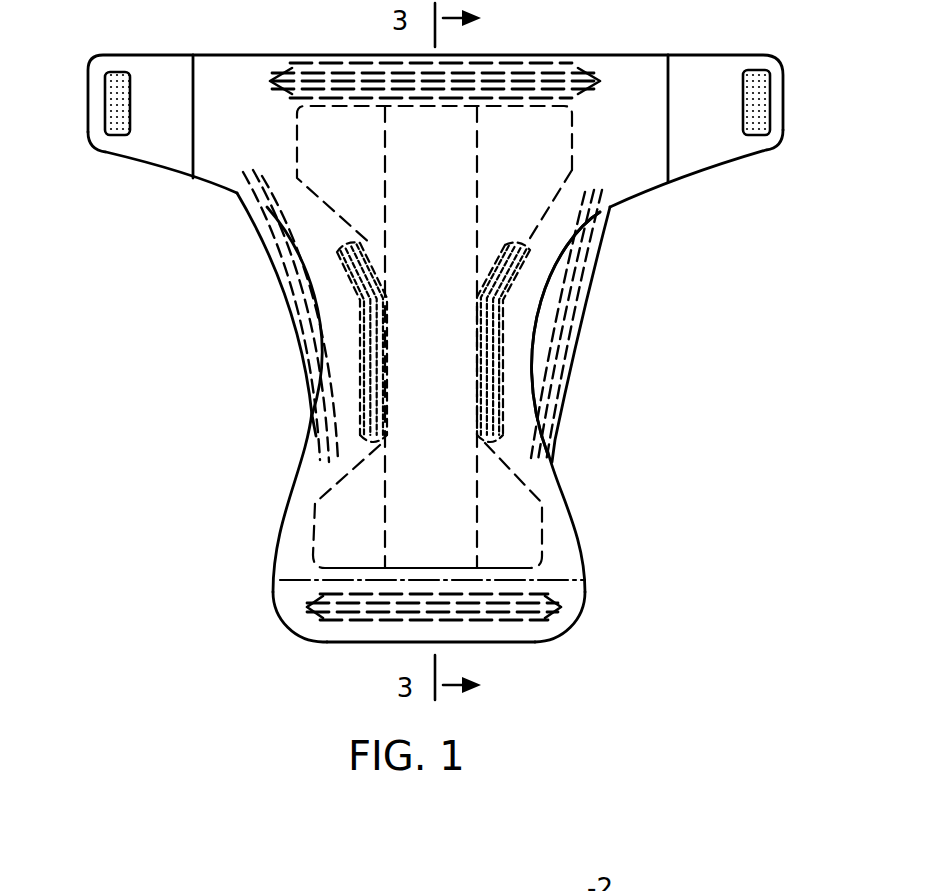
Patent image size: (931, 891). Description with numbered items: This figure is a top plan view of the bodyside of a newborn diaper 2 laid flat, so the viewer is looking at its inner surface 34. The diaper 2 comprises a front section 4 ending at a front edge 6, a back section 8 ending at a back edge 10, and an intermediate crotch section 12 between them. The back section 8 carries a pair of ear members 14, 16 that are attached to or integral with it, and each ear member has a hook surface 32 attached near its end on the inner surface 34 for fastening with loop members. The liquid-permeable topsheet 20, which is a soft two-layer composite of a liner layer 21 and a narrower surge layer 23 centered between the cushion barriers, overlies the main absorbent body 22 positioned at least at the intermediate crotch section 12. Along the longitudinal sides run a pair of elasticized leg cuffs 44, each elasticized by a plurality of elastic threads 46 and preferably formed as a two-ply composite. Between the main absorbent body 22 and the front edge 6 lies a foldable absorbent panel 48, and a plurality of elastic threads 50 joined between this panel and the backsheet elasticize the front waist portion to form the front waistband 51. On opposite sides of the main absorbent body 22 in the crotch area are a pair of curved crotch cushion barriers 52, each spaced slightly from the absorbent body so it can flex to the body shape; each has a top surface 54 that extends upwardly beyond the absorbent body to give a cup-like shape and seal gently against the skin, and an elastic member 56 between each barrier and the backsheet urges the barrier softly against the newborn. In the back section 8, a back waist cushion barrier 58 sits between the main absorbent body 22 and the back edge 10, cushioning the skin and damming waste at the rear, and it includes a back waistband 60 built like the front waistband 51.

The diaper 2 is at (188, 409).
The front section 4 is at (208, 596).
The front edge 6 is at (500, 647).
The back section 8 is at (156, 198).
The back edge 10 is at (590, 55).
The intermediate crotch section 12 is at (680, 427).
The ear member 14 is at (697, 68).
The ear member 16 is at (163, 70).
The topsheet 20 is at (666, 181).
The liner layer 21 is at (525, 296).
The main absorbent body 22 is at (299, 527).
The surge layer 23 is at (453, 163).
The hook surface 32 is at (108, 90).
The inner surface 34 is at (443, 503).
The leg cuff 44 is at (273, 287).
The elastic threads 46 is at (294, 355).
The foldable absorbent panel 48 is at (608, 604).
The elastic threads 50 is at (362, 600).
The front waistband 51 is at (266, 628).
The crotch cushion barrier 52 is at (378, 243).
The top surface 54 is at (492, 394).
The elastic member 56 is at (396, 285).
The back waist cushion barrier 58 is at (310, 60).
The back waistband 60 is at (503, 36).